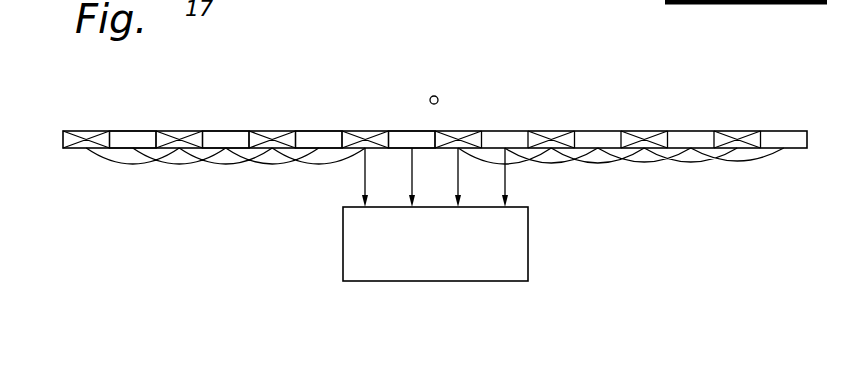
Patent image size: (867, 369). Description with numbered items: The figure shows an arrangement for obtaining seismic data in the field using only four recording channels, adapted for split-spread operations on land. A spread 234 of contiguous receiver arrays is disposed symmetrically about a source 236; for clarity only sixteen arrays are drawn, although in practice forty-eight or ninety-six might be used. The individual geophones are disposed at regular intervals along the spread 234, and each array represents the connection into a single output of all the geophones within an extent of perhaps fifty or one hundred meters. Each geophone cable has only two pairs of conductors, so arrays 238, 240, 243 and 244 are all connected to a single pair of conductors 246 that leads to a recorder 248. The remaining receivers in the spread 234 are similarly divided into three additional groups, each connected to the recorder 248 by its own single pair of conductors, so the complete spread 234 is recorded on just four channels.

The spread 234 is at (75, 123).
The source 236 is at (435, 96).
The array 238 is at (126, 130).
The array 240 is at (222, 130).
The transducer element 243 is at (315, 130).
The array 244 is at (405, 130).
The pair of conductors 246 is at (180, 160).
The recorder 248 is at (431, 283).